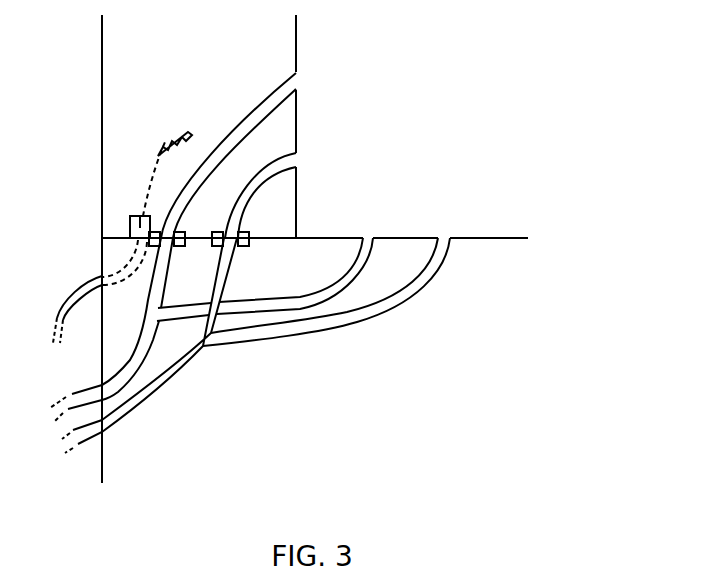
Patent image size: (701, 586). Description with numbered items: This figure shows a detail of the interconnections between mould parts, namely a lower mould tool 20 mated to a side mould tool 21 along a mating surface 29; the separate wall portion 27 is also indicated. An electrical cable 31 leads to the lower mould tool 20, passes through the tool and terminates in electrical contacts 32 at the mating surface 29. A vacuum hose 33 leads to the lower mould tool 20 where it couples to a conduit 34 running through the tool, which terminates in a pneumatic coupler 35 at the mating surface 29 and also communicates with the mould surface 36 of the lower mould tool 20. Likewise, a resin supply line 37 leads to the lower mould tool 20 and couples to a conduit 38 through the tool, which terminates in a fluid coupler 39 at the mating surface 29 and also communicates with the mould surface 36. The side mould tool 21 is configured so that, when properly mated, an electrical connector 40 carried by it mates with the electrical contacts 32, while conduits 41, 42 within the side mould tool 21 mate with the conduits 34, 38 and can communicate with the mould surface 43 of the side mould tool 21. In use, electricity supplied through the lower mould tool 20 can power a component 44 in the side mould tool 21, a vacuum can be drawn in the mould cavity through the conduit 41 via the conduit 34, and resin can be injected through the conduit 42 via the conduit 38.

The lower mould tool 20 is at (370, 388).
The side mould tool 21 is at (190, 64).
The partition wall 27 is at (252, 237).
The mating surface 29 is at (277, 239).
The electrical cable 31 is at (72, 290).
The electrical contacts 32 is at (130, 230).
The vacuum hose 33 is at (72, 392).
The conduit 34 is at (140, 342).
The pneumatic coupler 35 is at (180, 247).
The mould surface 36 is at (500, 238).
The resin supply line 37 is at (85, 447).
The conduit 38 is at (152, 408).
The fluid coupler 39 is at (243, 247).
The electrical connector 40 is at (143, 214).
The conduit 41 is at (235, 129).
The conduit 42 is at (280, 167).
The mould surface 43 is at (298, 117).
The component 44 is at (170, 129).